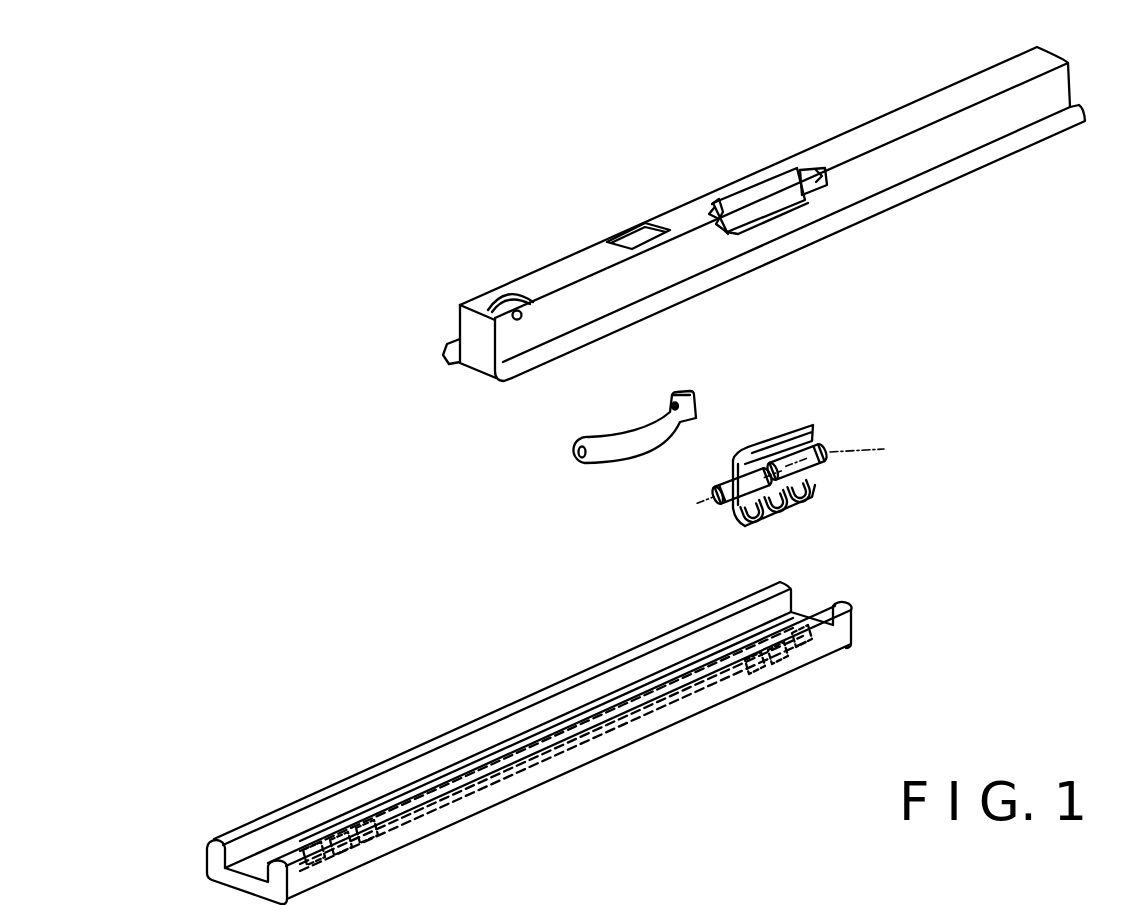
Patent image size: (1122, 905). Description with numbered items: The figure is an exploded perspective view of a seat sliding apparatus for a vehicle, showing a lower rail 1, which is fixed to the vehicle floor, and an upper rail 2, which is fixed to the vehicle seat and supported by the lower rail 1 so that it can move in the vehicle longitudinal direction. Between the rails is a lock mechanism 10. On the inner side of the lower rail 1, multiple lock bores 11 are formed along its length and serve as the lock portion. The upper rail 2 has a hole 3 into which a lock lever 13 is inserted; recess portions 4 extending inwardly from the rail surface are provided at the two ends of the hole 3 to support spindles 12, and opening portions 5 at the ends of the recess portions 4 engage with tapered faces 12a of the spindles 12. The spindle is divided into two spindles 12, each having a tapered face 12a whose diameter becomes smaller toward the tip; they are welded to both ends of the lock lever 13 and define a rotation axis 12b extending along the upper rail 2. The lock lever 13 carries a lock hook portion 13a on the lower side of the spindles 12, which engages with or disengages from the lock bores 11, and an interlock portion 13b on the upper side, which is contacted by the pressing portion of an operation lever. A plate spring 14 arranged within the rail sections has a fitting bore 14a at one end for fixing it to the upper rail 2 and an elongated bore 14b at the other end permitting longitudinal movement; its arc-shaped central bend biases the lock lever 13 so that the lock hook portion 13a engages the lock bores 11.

The lower rail 1 is at (552, 733).
The upper rail 2 is at (941, 96).
The hole 3 is at (763, 180).
The recess portion 4 is at (722, 210).
The opening portion 5 is at (720, 203).
The lock mechanism 10 is at (917, 392).
The lock bore 11 is at (797, 620).
The spindle 12 is at (791, 489).
The tapered face 12a is at (822, 452).
The rotation axis 12b is at (884, 450).
The lock lever 13 is at (803, 458).
The lock hook portion 13a is at (795, 517).
The interlock portion 13b is at (772, 435).
The plate spring 14 is at (657, 458).
The fitting bore 14a is at (581, 465).
The elongated bore 14b is at (695, 418).